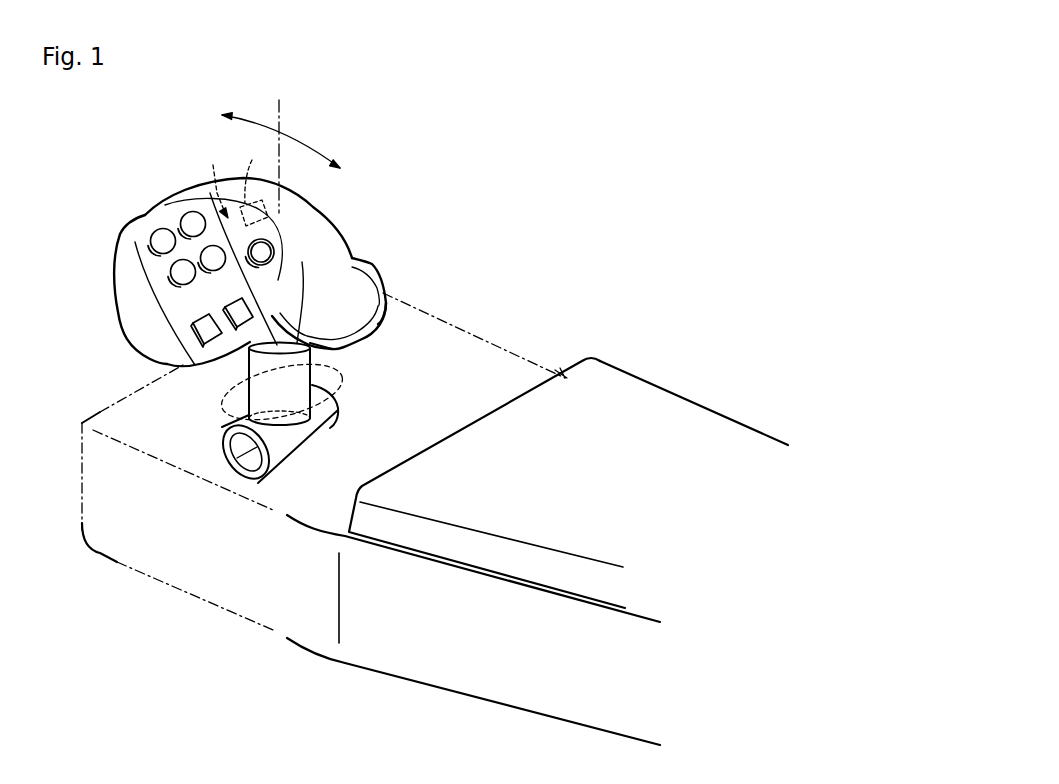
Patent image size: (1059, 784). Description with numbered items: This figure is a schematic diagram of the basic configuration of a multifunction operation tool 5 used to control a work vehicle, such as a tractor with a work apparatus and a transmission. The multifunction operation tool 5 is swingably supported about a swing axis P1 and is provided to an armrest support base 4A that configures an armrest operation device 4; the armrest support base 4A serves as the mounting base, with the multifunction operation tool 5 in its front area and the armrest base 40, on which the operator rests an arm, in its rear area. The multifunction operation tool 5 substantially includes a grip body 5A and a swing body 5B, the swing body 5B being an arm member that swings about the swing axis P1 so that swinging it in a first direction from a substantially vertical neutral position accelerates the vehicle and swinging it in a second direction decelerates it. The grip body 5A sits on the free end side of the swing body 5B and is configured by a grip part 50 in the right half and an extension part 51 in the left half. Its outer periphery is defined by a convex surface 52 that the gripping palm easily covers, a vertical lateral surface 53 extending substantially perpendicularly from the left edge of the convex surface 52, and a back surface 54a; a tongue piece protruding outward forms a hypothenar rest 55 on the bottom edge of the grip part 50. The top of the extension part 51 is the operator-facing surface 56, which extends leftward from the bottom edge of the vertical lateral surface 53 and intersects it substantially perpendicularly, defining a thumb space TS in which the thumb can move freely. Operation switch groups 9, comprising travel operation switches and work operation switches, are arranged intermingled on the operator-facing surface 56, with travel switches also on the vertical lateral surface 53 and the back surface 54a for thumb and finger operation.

The armrest operation device 4 is at (599, 268).
The armrest support base 4A is at (383, 652).
The armrest base 40 is at (683, 408).
The multifunction operation tool 5 is at (101, 207).
The grip body 5A is at (403, 273).
The swing body 5B is at (247, 382).
The operation switch groups 9 is at (190, 222).
The grip part 50 is at (340, 231).
The extension part 51 is at (120, 316).
The convex surface 52 is at (345, 258).
The vertical lateral surface 53 is at (287, 296).
The back surface 54a is at (213, 200).
The hypothenar rest 55 is at (355, 317).
The operator-facing surface 56 is at (162, 265).
The thumb space TS is at (272, 278).
The swing axis P1 is at (258, 447).